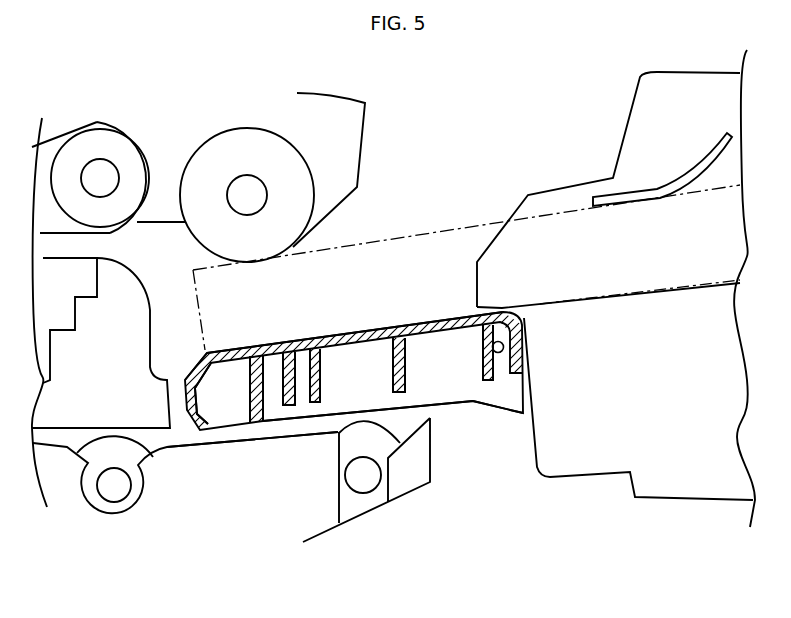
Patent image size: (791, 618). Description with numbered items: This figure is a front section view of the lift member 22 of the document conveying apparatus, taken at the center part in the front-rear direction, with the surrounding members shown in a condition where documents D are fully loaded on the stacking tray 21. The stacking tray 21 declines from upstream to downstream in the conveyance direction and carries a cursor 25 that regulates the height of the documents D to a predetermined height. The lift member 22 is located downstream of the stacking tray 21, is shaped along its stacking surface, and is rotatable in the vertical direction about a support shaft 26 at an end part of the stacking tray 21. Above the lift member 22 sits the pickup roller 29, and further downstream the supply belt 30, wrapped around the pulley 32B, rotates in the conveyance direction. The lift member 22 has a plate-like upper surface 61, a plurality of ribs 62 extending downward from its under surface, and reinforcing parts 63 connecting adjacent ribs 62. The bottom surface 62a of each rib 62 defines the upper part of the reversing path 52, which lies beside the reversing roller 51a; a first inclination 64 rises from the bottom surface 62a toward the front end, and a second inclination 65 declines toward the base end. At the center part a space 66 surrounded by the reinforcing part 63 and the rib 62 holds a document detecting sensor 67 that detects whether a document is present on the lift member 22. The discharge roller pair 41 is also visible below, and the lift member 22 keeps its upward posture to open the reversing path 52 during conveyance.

The stacking tray 21 is at (610, 450).
The lift member 22 is at (468, 427).
The cursor 25 is at (640, 187).
The support shaft 26 is at (499, 355).
The pickup roller 29 is at (248, 135).
The supply belt 30 is at (137, 133).
The pulley 32B is at (103, 143).
The document D is at (400, 240).
The discharge roller pair 41 is at (350, 500).
The reversing roller 51a is at (133, 465).
The reversing path 52 is at (247, 432).
The upper surface 61 is at (357, 345).
The rib 62 is at (327, 422).
The bottom surface 62a is at (438, 408).
The reinforcing part 63 is at (290, 378).
The first inclination 64 is at (268, 422).
The second inclination 65 is at (490, 385).
The space 66 is at (205, 357).
The document detecting sensor 67 is at (215, 422).